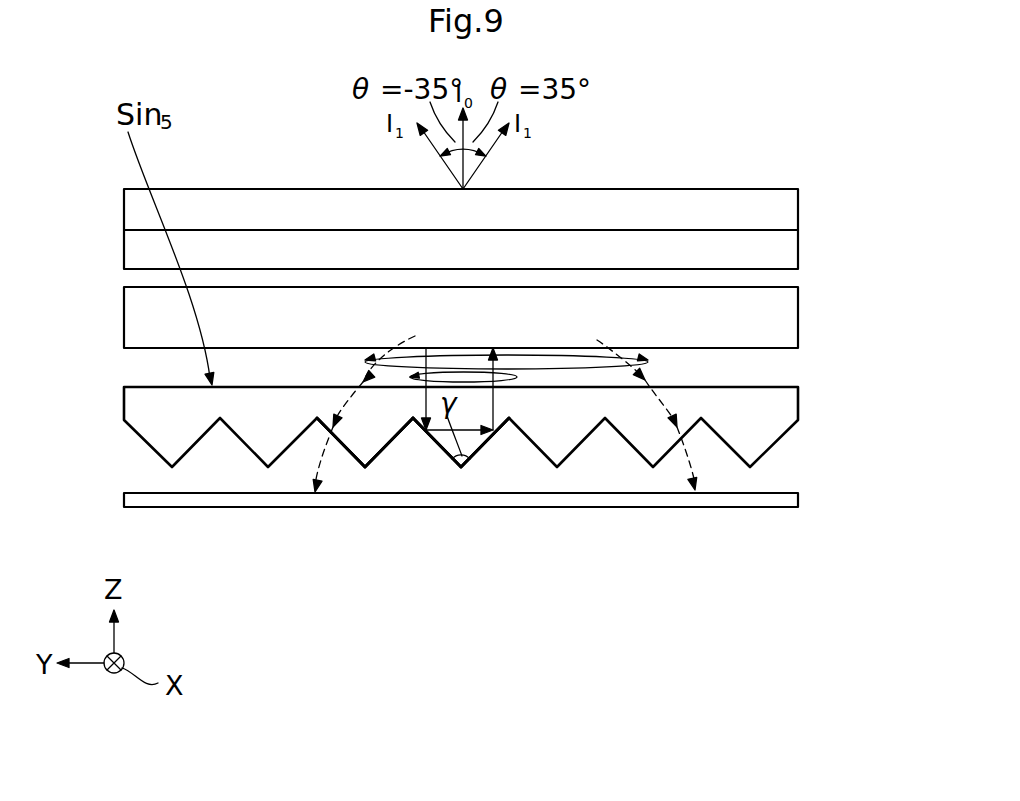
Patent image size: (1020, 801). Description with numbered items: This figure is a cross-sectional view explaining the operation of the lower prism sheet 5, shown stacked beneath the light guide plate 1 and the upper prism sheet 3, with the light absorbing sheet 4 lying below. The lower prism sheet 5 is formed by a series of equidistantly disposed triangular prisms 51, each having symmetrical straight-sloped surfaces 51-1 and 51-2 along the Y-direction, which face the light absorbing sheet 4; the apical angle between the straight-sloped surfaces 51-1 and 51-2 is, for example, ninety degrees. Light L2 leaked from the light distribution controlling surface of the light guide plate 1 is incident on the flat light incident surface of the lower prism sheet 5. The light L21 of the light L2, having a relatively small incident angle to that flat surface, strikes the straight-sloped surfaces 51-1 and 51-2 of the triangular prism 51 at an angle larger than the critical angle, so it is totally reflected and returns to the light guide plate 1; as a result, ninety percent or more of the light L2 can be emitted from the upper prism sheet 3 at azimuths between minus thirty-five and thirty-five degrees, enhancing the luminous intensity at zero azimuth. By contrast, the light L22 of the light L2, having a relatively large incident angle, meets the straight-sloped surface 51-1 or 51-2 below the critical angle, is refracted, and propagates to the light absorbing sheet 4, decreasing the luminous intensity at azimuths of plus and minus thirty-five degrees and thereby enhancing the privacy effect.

The light guide plate 1 is at (798, 314).
The upper prism sheet 3 is at (798, 250).
The light absorbing sheet 4 is at (798, 500).
The lower prism sheet 5 is at (798, 403).
The triangular prism 51 is at (545, 602).
The straight-sloped surface 51-1 is at (350, 452).
The straight-sloped surface 51-2 is at (385, 447).
The light L2 is at (593, 362).
The light L21 is at (500, 373).
The light L22 is at (372, 362).